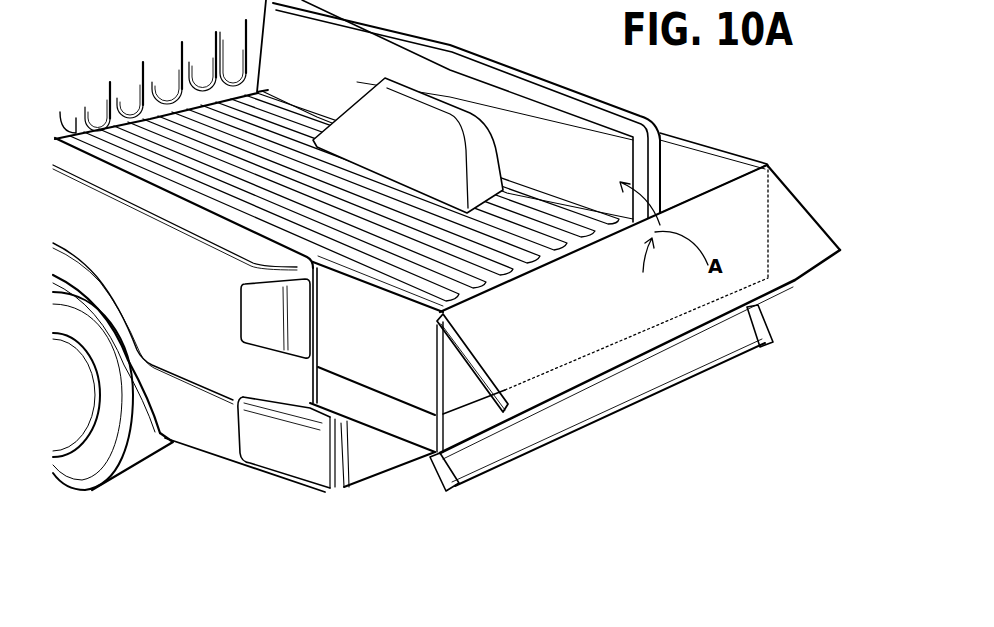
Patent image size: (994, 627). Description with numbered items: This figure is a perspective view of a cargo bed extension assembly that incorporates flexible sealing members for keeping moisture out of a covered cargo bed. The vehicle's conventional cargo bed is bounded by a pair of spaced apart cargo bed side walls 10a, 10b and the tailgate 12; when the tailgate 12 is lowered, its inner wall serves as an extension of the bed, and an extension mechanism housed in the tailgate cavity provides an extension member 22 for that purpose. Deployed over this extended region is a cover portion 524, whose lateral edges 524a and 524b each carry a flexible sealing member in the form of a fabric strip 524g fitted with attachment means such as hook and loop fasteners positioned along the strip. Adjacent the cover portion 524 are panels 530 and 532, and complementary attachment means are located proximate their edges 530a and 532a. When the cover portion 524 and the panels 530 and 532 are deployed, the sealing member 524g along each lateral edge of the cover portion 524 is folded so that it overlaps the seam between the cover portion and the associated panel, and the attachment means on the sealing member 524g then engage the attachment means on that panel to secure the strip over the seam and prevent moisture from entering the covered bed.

The cargo bed side wall 10a is at (230, 333).
The cargo bed side wall 10b is at (537, 133).
The tailgate 12 is at (418, 412).
The extension member 22 is at (487, 385).
The cover portion 524 is at (790, 212).
The lateral edge 524a is at (458, 380).
The lateral edge 524b is at (843, 232).
The fabric strip 524g is at (457, 347).
The panel 530 is at (327, 418).
The edge 530a is at (356, 277).
The panel 532 is at (727, 167).
The edge 532a is at (703, 145).